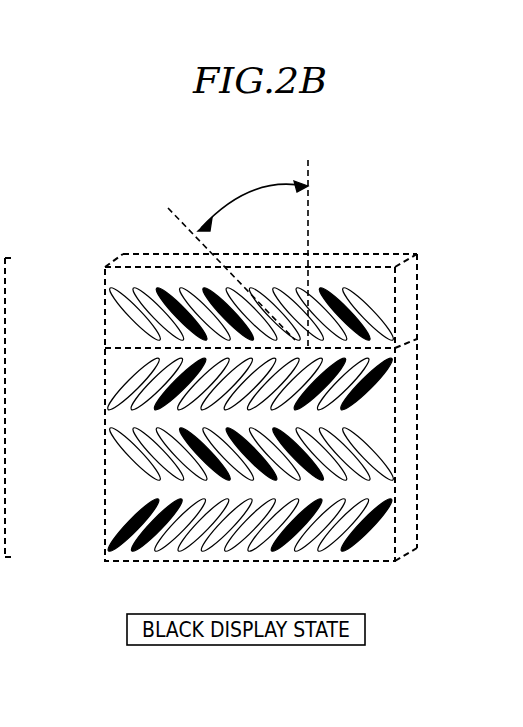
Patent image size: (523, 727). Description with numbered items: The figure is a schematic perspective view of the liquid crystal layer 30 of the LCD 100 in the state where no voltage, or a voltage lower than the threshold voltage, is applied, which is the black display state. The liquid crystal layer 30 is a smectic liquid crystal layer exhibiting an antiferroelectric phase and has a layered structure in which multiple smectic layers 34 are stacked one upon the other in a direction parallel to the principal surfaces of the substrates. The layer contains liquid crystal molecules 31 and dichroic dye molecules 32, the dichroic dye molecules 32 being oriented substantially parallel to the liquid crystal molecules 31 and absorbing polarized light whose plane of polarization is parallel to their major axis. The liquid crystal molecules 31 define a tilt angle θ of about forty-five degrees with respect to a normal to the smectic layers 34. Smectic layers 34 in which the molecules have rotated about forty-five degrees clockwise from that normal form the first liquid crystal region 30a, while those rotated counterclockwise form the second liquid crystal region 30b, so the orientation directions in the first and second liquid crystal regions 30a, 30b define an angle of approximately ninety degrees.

The LCD 100 is at (343, 249).
The smectic layers 34 is at (268, 308).
The liquid crystal molecules 31 is at (366, 318).
The dichroic dye molecules 32 is at (364, 386).
The liquid crystal layer 30 is at (232, 511).
The second liquid crystal region 30b is at (97, 422).
The first liquid crystal region 30a is at (97, 490).